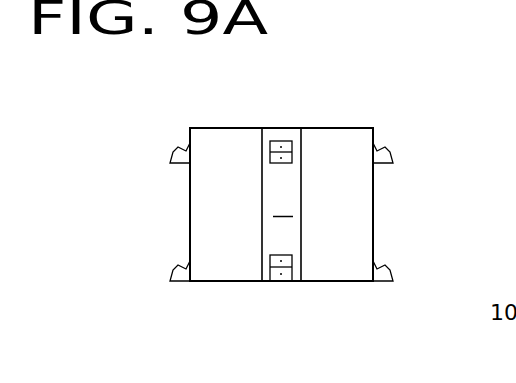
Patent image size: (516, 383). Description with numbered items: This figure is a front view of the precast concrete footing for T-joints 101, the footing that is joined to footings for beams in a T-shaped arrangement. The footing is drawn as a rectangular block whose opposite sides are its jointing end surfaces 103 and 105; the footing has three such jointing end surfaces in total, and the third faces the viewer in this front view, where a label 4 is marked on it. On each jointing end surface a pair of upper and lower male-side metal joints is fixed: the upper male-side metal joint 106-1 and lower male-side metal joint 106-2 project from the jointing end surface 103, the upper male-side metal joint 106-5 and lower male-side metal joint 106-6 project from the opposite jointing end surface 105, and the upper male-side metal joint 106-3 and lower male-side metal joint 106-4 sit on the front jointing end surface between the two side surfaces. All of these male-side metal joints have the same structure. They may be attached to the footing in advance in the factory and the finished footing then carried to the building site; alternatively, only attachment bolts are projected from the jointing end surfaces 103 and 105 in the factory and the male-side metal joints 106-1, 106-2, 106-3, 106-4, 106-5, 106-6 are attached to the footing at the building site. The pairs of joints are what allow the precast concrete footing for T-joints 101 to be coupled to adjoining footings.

The precast concrete footing for T-joints 101 is at (278, 100).
The jointing end surface 103 is at (373, 222).
The jointing end surface 105 is at (190, 213).
The chip region 4 is at (283, 205).
The male-side metal joint 106-1 is at (391, 150).
The male-side metal joint 106-2 is at (393, 268).
The male-side metal joint 106-3 is at (292, 143).
The male-side metal joint 106-4 is at (290, 278).
The male-side metal joint 106-5 is at (172, 155).
The male-side metal joint 106-6 is at (172, 275).